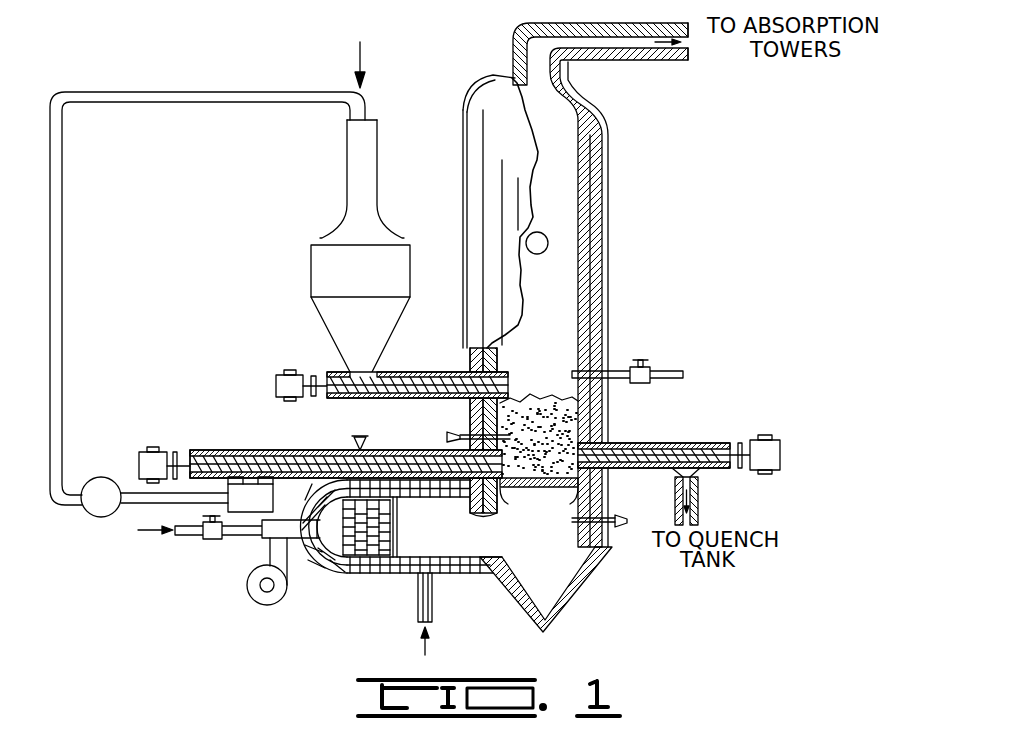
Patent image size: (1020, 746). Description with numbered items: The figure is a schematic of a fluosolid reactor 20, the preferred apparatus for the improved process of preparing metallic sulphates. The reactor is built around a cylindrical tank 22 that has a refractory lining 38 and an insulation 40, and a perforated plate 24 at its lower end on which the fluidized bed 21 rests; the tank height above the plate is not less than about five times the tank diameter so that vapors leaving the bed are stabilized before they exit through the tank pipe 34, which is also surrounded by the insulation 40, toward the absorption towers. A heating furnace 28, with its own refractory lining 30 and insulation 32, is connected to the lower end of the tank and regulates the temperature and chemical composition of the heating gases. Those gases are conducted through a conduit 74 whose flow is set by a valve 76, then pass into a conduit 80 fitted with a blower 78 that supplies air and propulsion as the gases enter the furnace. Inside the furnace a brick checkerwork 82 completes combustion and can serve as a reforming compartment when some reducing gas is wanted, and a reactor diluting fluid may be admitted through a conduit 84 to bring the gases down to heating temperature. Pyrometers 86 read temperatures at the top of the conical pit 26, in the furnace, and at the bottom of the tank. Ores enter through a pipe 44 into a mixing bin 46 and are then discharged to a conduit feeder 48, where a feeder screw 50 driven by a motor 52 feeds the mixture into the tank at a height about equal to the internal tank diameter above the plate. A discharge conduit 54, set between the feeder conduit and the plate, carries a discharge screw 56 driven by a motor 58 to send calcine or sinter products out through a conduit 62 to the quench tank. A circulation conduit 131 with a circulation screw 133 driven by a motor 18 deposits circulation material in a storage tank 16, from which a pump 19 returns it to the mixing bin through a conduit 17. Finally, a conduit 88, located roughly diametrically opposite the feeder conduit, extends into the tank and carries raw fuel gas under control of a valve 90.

The storage tank 16 is at (262, 503).
The conduit 17 is at (60, 251).
The motor 18 is at (158, 460).
The pump 19 is at (106, 462).
The fluosolid reactor 20 is at (624, 169).
The fluidized bed 21 is at (543, 408).
The cylindrical tank 22 is at (608, 215).
The perforated plate 24 is at (522, 493).
The conical pit 26 is at (545, 587).
The heating furnace 28 is at (378, 591).
The refractory lining 30 is at (345, 568).
The insulation 32 is at (398, 560).
The tank pipe 34 is at (605, 38).
The refractory lining 38 is at (588, 127).
The insulation 40 is at (595, 157).
The pipe 44 is at (369, 166).
The mixing bin 46 is at (375, 327).
The conduit feeder 48 is at (398, 372).
The feeder screw 50 is at (420, 397).
The motor 52 is at (285, 378).
The discharge conduit 54 is at (633, 443).
The discharge screw 56 is at (676, 443).
The motor 58 is at (770, 447).
The conduit 62 is at (700, 503).
The conduit 74 is at (178, 534).
The valve 76 is at (208, 540).
The blower 78 is at (262, 560).
The conduit 80 is at (268, 539).
The brick checkerwork 82 is at (375, 548).
The conduit 84 is at (432, 606).
The pyrometers 86 is at (360, 436).
The conduit 88 is at (612, 378).
The valve 90 is at (650, 368).
The circulation conduit 131 is at (288, 450).
The circulation screw 133 is at (383, 452).